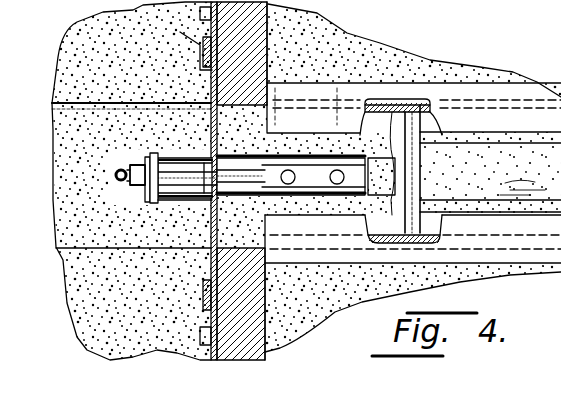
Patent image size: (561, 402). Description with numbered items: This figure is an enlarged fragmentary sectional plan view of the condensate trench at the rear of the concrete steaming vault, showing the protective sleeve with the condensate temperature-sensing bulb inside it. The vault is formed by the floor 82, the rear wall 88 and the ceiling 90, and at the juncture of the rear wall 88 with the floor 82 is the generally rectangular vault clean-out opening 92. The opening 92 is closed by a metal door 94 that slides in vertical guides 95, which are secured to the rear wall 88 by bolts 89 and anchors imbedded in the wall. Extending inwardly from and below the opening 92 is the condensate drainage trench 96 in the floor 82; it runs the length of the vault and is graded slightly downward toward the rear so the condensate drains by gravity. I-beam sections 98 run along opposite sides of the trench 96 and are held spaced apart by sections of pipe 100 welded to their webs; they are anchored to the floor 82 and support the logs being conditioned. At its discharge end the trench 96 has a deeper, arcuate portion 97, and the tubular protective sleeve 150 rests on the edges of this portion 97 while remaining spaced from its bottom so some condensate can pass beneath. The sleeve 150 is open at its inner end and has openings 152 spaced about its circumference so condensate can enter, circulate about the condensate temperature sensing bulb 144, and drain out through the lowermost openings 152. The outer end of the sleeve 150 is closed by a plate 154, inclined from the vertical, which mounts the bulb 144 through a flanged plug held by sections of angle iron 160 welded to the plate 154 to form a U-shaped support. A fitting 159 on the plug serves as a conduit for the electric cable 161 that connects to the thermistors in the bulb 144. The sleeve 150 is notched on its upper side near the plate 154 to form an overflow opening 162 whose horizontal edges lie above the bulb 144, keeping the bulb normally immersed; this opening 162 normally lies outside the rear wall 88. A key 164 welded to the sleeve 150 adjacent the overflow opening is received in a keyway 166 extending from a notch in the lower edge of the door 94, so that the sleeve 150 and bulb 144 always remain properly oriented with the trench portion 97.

The floor 82 is at (382, 43).
The rear wall 88 is at (276, 13).
The bolts 89 is at (205, 13).
The ceiling 90 is at (545, 262).
The vault clean-out opening 92 is at (267, 78).
The metal door 94 is at (208, 80).
The vertical guides 95 is at (200, 45).
The condensate drainage trench 96 is at (520, 141).
The deeper portion of the trench 97 is at (413, 168).
The I-beam sections 98 is at (446, 97).
The sections of pipe 100 is at (462, 166).
The condensate temperature sensing bulb 144 is at (196, 158).
The tubular protective sleeve 150 is at (324, 160).
The openings 152 is at (337, 188).
The plate 154 is at (151, 203).
The fitting 159 is at (114, 174).
The sections of angle iron 160 is at (132, 188).
The electric cable 161 is at (120, 167).
The overflow opening 162 is at (168, 157).
The key 164 is at (235, 168).
The keyway 166 is at (212, 207).